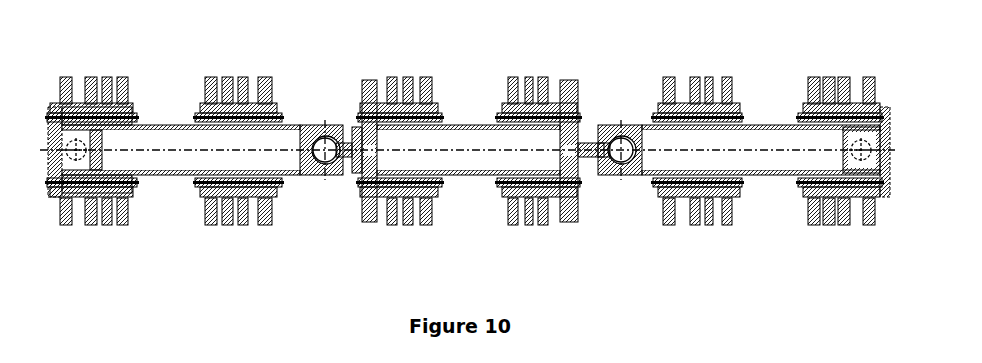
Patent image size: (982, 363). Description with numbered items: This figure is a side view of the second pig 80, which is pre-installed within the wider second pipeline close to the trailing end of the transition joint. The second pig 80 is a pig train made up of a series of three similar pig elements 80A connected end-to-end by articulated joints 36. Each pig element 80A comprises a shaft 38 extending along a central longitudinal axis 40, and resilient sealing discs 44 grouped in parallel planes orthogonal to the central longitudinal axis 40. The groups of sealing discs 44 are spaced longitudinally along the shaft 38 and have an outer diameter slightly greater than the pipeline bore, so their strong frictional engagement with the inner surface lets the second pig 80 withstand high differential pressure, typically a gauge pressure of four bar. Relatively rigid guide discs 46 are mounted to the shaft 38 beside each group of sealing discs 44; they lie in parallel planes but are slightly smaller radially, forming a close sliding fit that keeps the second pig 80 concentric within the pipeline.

The second pig 80 is at (107, 270).
The pig element 80A is at (163, 138).
The shaft 38 is at (167, 174).
The guide disc 46 is at (68, 88).
The sealing disc 44 is at (238, 221).
The articulated joint 36 is at (340, 145).
The central longitudinal axis 40 is at (45, 148).